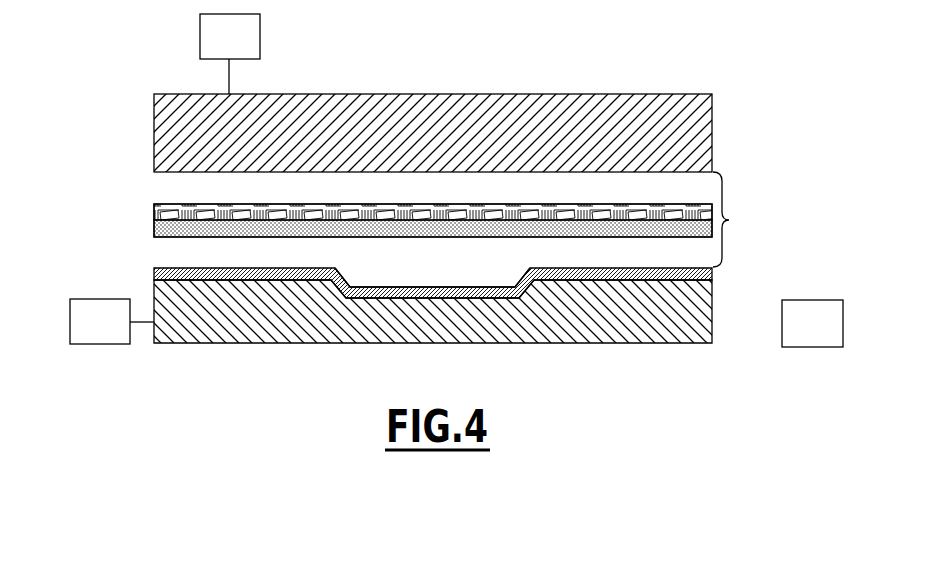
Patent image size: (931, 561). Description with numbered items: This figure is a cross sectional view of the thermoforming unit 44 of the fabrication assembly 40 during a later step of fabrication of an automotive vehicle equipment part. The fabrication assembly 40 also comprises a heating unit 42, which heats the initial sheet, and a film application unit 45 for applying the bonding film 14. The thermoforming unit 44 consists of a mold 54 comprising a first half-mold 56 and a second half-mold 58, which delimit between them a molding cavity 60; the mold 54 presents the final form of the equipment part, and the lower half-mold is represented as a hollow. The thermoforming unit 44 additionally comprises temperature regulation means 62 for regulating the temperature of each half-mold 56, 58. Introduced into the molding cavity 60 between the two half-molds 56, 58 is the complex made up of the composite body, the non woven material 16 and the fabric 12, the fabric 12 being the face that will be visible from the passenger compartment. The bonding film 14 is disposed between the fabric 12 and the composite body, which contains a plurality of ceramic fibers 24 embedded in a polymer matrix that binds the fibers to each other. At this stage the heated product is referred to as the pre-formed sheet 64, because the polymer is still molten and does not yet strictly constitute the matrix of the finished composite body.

The fabric 12 is at (156, 196).
The bonding film 14 is at (154, 218).
The non woven material 16 is at (284, 274).
The ceramic fibers 24 is at (225, 239).
The fabrication assembly 40 is at (80, 178).
The heating unit 42 is at (748, 117).
The thermoforming unit 44 is at (86, 268).
The film application unit 45 is at (812, 323).
The mold 54 is at (635, 81).
The first half-mold 56 is at (641, 320).
The second half-mold 58 is at (670, 119).
The molding cavity 60 is at (415, 203).
The temperature regulation means 62 is at (165, 179).
The pre-formed sheet 64 is at (154, 235).